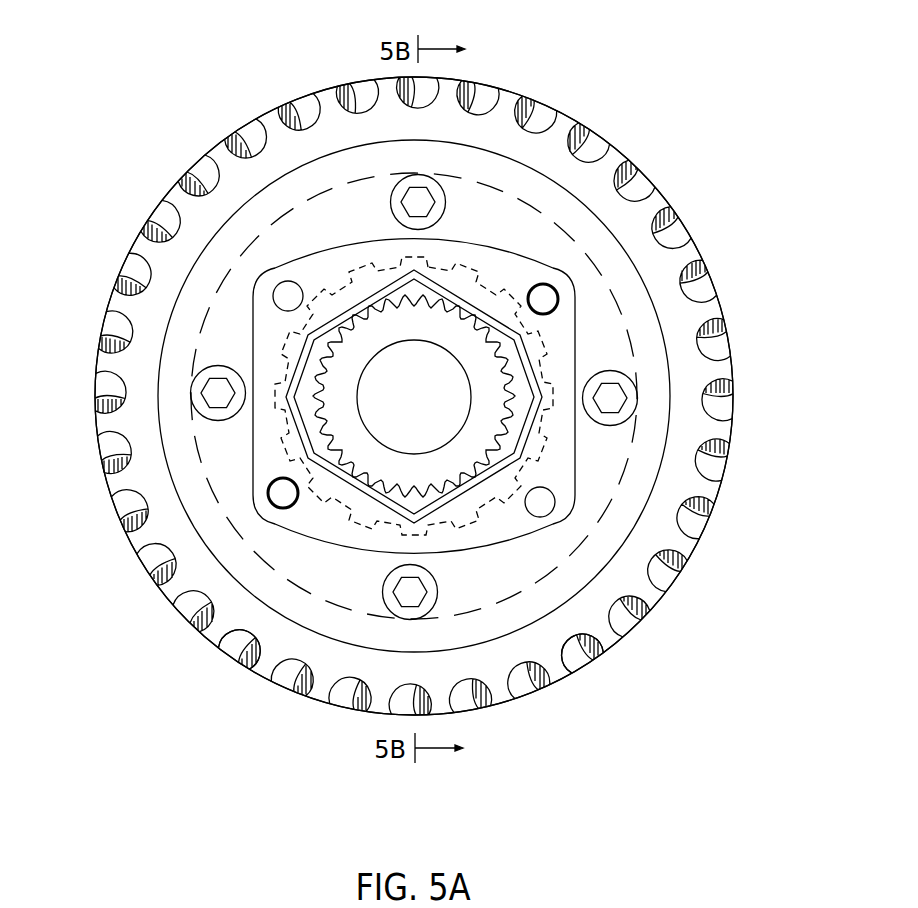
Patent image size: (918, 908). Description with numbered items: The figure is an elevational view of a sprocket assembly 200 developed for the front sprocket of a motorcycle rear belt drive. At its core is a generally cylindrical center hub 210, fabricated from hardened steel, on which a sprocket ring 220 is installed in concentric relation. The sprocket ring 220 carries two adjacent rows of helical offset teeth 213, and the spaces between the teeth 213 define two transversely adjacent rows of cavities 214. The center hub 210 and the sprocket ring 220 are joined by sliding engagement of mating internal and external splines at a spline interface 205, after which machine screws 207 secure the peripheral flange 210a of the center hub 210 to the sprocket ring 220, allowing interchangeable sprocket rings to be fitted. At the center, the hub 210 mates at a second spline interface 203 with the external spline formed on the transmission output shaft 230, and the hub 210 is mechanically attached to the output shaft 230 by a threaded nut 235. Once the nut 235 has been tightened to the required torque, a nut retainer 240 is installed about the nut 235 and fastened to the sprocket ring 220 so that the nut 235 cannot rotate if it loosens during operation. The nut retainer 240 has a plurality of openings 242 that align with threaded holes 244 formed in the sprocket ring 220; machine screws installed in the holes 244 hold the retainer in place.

The sprocket assembly 200 is at (622, 86).
The sprocket ring 220 is at (212, 146).
The helical offset teeth 213 is at (130, 268).
The cavities 214 is at (230, 653).
The peripheral flange 210a is at (592, 257).
The center hub 210 is at (414, 396).
The spline interface 203 is at (377, 467).
The transmission output shaft 230 is at (436, 432).
The threaded nut 235 is at (515, 443).
The spline interface 205 is at (384, 258).
The nut retainer 240 is at (580, 363).
The openings 242 is at (278, 283).
The threaded holes 244 is at (550, 298).
The machine screws 207 is at (437, 210).